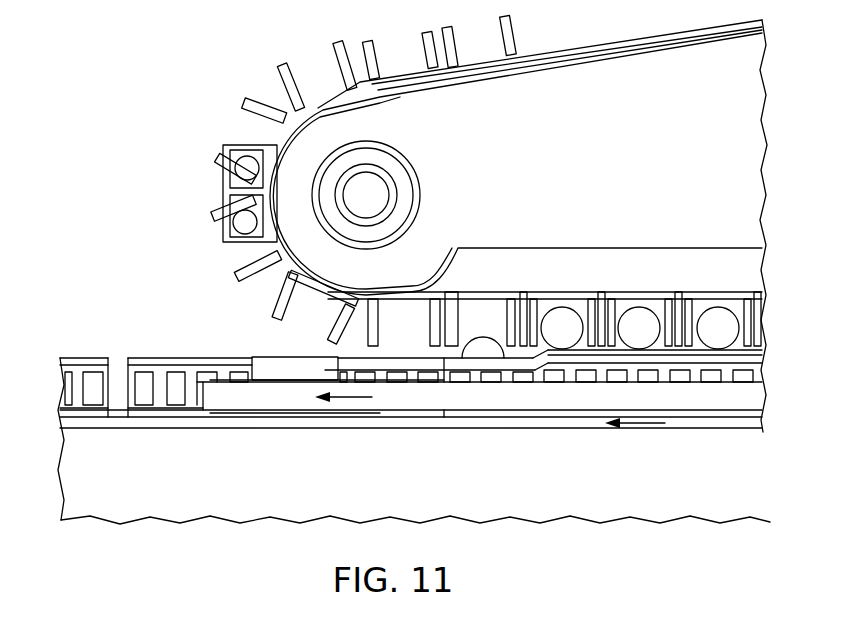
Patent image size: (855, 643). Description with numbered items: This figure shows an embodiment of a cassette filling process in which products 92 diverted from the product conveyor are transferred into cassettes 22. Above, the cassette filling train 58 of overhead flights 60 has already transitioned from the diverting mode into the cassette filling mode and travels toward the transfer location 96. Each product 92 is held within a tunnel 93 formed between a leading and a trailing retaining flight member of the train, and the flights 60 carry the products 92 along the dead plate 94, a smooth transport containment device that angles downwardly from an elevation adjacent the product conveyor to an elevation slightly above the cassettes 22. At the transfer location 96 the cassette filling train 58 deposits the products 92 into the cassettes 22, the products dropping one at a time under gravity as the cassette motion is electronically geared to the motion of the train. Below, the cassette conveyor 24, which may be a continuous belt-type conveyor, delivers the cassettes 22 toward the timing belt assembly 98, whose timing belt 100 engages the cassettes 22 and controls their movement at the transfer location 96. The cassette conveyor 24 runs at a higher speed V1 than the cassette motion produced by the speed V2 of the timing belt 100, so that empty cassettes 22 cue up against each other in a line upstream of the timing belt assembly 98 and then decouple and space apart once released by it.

The cassette filling train 58 is at (734, 278).
The overhead flight 60 is at (566, 287).
The product 92 is at (483, 336).
The tunnel 93 is at (658, 301).
The timing belt assembly 98 is at (139, 418).
The cassette 22 is at (176, 416).
The transfer location 96 is at (543, 353).
The dead plate 94 is at (683, 354).
The timing belt 100 is at (458, 400).
The cassette conveyor 24 is at (740, 422).
The cassette conveyor speed V1 is at (637, 425).
The timing belt speed V2 is at (347, 399).